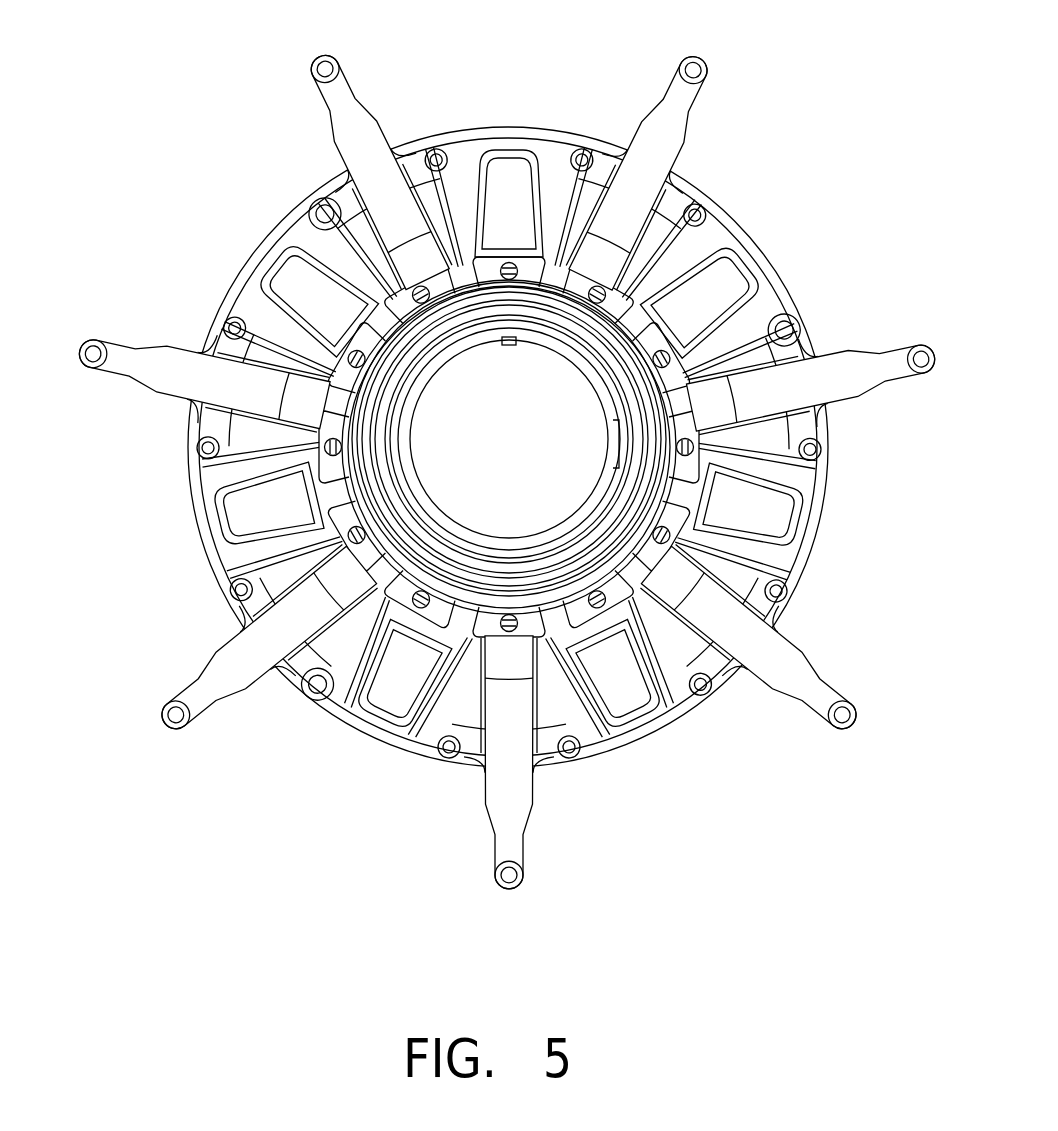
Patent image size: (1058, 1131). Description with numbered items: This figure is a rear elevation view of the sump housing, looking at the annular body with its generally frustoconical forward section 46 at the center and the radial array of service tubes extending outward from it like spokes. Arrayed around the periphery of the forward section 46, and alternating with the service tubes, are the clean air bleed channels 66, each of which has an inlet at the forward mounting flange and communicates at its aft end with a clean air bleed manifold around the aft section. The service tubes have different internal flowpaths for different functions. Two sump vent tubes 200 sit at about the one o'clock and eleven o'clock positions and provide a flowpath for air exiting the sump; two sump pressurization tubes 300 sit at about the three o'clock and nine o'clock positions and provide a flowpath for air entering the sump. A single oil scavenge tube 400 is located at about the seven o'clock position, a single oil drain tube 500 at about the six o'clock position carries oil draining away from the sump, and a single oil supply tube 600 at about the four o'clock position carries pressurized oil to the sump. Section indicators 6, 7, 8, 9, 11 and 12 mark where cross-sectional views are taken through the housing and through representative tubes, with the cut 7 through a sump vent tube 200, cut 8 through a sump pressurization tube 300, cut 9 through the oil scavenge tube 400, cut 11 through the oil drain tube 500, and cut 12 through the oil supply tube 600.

The forward section 46 is at (718, 220).
The clean air bleed channels 66 is at (488, 225).
The sump vent tube 200 is at (355, 108).
The sump pressurization tube 300 is at (122, 352).
The oil scavenge tube 400 is at (212, 674).
The oil drain tube 500 is at (497, 808).
The oil supply tube 600 is at (820, 674).
The section line 6- 6 is at (548, 412).
The section line 7- 7 is at (481, 386).
The section line 8- 8 is at (49, 342).
The section line 9- 9 is at (137, 744).
The section line 11- 11 is at (509, 510).
The section line 12- 12 is at (560, 485).